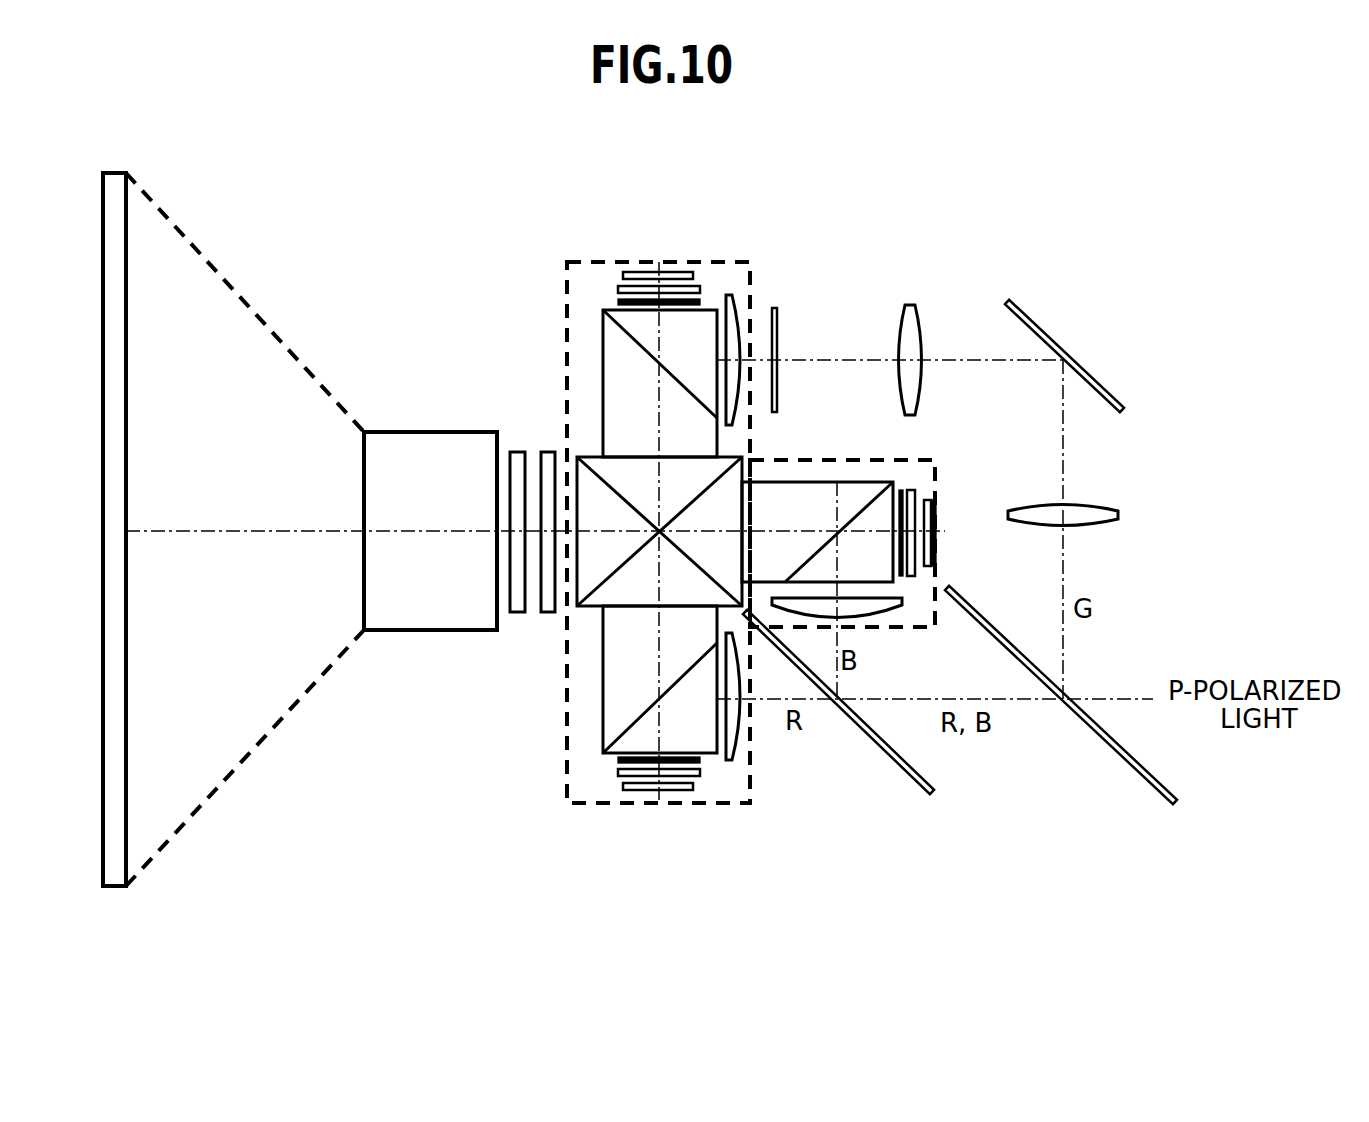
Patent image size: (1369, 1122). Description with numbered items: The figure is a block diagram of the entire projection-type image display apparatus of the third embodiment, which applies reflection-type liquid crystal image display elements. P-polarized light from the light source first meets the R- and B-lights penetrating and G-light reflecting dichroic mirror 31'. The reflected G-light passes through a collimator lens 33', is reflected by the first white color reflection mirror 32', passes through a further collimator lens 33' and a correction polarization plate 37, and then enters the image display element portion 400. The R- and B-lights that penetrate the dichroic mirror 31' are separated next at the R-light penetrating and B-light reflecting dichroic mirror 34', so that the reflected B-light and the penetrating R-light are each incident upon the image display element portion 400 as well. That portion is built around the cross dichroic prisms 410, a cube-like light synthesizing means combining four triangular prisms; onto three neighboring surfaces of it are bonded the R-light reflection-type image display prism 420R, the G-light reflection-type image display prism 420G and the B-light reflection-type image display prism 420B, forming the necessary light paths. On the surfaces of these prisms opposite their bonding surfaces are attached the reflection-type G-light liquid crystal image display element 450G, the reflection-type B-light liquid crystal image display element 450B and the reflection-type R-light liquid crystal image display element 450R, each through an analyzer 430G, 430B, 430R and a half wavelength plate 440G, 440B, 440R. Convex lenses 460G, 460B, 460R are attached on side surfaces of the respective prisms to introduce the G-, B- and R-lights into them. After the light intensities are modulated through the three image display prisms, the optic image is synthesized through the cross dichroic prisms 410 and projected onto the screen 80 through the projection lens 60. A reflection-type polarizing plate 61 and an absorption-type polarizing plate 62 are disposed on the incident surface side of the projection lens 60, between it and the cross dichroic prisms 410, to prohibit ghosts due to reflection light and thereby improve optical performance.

The screen 80 is at (118, 380).
The projection lens 60 is at (398, 447).
The reflection-type polarizing plate 61 is at (546, 614).
The absorption-type polarizing plate 62 is at (516, 614).
The image display element portion 400 is at (732, 262).
The cross dichroic prisms 410 is at (622, 475).
The G-light reflection-type image display prism 420G is at (622, 372).
The analyzer 430G is at (614, 300).
The ½ wavelength plate 440G is at (617, 284).
The reflection-type G-light liquid crystal image display element 450G is at (650, 274).
The convex lens 460G is at (738, 316).
The B-light reflection-type image display prism 420B is at (800, 496).
The analyzer 430B is at (914, 490).
The ½ wavelength plate 440B is at (932, 508).
The reflection-type B-light liquid crystal image display element 450B is at (938, 546).
The convex lens 460B is at (880, 606).
The R-light reflection-type image display prism 420R is at (620, 700).
The analyzer 430R is at (618, 766).
The ½ wavelength plate 440R is at (702, 772).
The reflection-type R-light liquid crystal image display element 450R is at (655, 792).
The convex lens 460R is at (740, 720).
The correction polarization plate 37 is at (777, 310).
The collimator lens 33' is at (1020, 387).
The first white color reflection mirror 32' is at (1086, 356).
The R-light penetrating and B-light reflecting dichroic mirror 34' is at (838, 733).
The R- and B-lights penetrating and G-light reflecting dichroic mirror 31' is at (1061, 695).